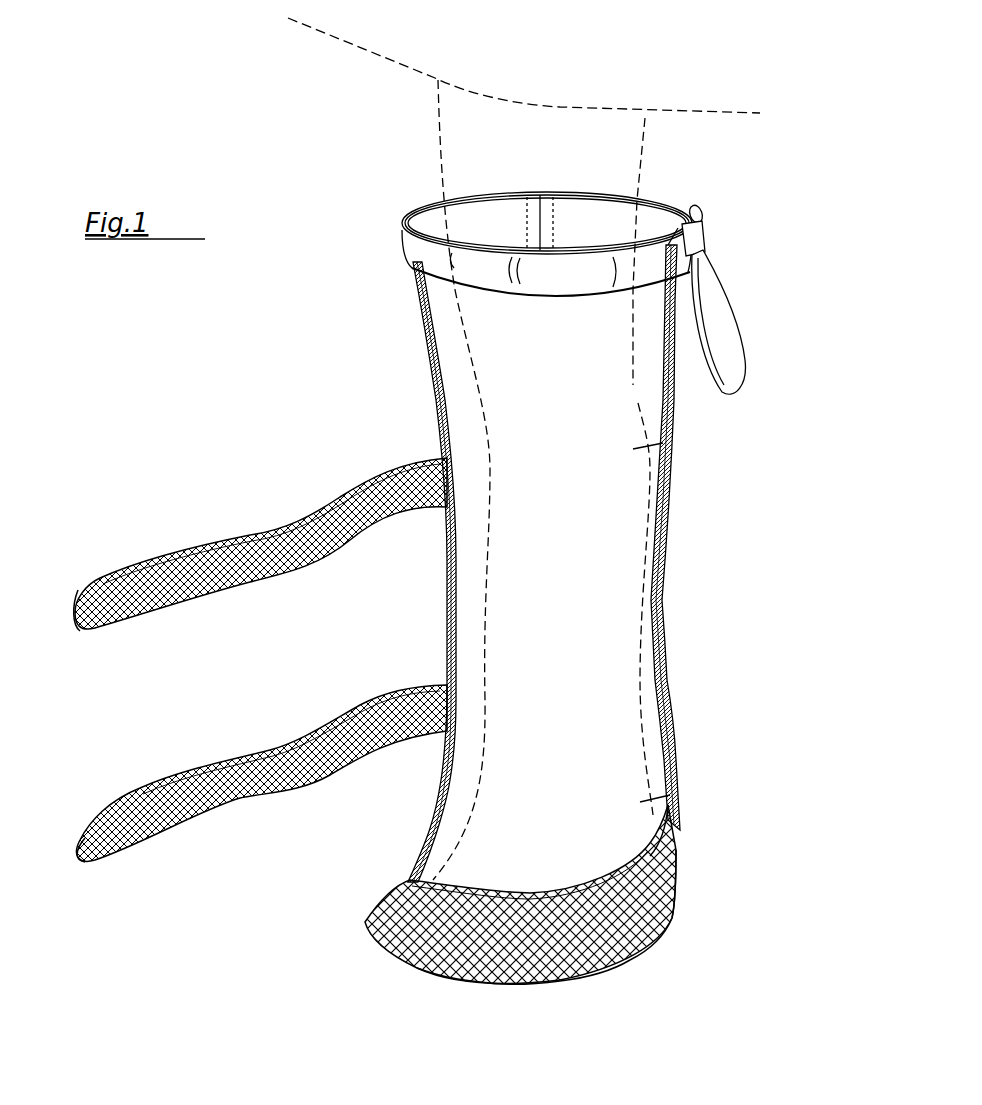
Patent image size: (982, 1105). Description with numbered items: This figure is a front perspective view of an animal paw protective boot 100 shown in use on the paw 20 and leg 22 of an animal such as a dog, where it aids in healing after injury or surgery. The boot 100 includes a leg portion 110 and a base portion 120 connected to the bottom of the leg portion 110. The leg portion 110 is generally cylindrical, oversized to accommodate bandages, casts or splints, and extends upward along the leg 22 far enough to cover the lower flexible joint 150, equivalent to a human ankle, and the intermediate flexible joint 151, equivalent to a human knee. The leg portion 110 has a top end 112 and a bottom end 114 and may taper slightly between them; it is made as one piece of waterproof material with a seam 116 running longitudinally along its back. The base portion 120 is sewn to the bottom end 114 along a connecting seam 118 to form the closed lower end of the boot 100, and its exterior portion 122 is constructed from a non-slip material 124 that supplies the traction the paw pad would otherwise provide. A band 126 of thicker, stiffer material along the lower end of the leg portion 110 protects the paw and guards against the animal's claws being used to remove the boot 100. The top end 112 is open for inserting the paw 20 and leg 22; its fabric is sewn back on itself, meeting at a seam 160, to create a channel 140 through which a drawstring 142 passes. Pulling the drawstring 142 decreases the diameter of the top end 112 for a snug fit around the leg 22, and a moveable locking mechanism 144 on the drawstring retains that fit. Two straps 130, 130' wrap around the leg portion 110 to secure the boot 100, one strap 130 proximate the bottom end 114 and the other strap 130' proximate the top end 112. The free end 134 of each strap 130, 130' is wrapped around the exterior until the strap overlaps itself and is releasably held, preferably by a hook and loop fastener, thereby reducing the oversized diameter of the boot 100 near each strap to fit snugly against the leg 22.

The boot 100 is at (290, 112).
The leg portion 110 is at (693, 278).
The top end 112 is at (672, 213).
The bottom end 114 is at (672, 922).
The seam 116 is at (543, 197).
The connecting seam 118 is at (540, 985).
The base portion 120 is at (403, 967).
The exterior portion 122 is at (605, 975).
The non-slip material 124 is at (460, 975).
The band 126 is at (670, 857).
The strap 130 is at (261, 752).
The strap 130' is at (261, 543).
The free end 134 is at (73, 635).
The channel 140 is at (407, 242).
The drawstring 142 is at (713, 243).
The locking mechanism 144 is at (707, 192).
The lower flexible joint 150 is at (680, 790).
The intermediate flexible joint 151 is at (663, 445).
The seam 160 is at (415, 278).
The paw 20 is at (675, 900).
The leg 22 is at (665, 548).